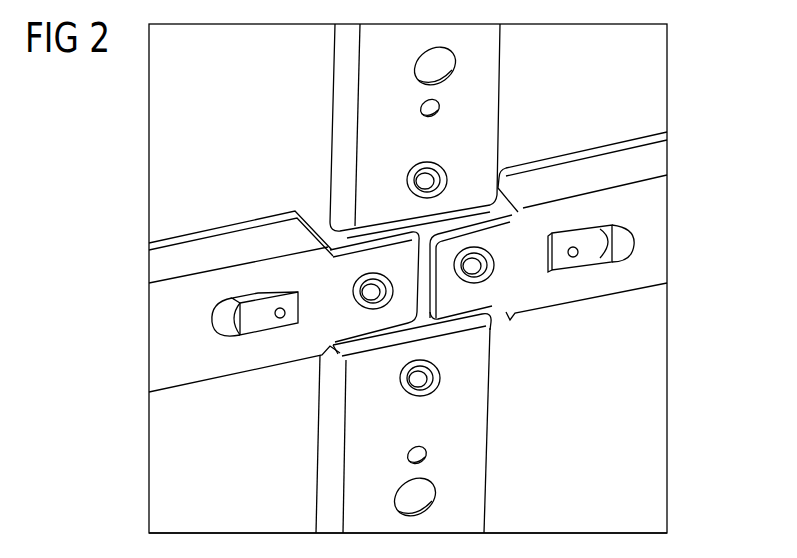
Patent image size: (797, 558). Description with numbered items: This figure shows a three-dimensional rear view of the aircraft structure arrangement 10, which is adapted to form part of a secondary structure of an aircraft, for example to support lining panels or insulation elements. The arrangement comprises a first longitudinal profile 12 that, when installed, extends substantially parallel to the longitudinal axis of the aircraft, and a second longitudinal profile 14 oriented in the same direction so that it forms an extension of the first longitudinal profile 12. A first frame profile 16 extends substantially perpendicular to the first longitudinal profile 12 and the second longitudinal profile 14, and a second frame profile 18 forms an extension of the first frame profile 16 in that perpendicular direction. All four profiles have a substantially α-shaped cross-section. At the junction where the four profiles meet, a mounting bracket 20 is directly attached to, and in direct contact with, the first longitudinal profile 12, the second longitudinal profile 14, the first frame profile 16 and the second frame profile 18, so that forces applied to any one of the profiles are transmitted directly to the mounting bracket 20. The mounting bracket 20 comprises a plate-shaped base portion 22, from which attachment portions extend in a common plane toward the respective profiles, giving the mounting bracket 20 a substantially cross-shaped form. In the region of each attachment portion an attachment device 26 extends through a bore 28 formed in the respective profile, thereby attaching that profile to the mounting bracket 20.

The aircraft structure arrangement 10 is at (690, 70).
The first longitudinal profile 12 is at (607, 170).
The second longitudinal profile 14 is at (200, 252).
The first frame profile 16 is at (487, 66).
The second frame profile 18 is at (475, 478).
The mounting bracket 20 is at (457, 323).
The base portion 22 is at (400, 228).
The attachment device 26 is at (442, 166).
The bore 28 is at (416, 167).